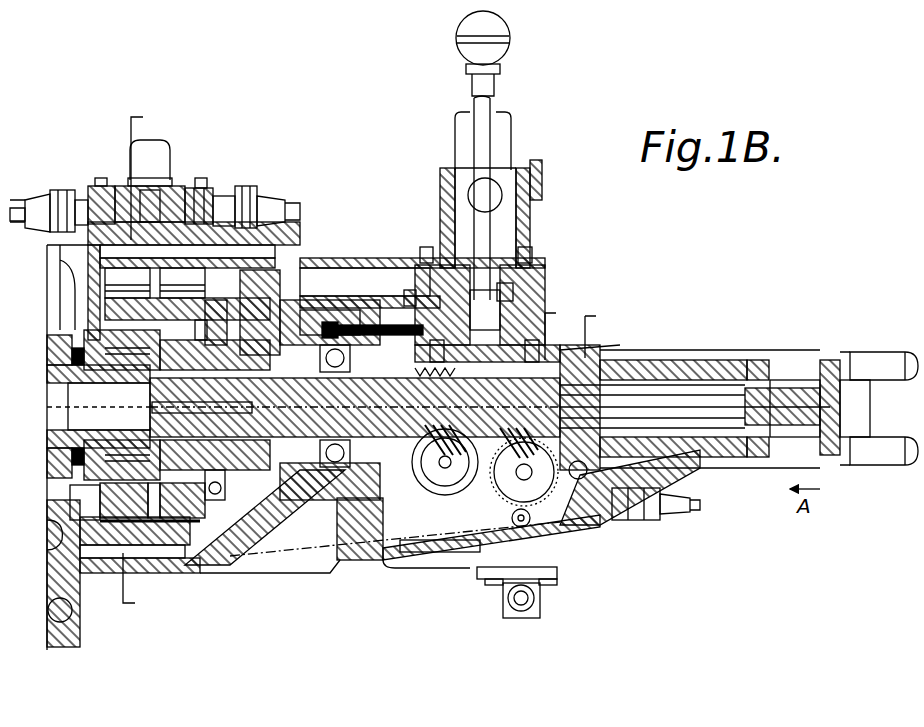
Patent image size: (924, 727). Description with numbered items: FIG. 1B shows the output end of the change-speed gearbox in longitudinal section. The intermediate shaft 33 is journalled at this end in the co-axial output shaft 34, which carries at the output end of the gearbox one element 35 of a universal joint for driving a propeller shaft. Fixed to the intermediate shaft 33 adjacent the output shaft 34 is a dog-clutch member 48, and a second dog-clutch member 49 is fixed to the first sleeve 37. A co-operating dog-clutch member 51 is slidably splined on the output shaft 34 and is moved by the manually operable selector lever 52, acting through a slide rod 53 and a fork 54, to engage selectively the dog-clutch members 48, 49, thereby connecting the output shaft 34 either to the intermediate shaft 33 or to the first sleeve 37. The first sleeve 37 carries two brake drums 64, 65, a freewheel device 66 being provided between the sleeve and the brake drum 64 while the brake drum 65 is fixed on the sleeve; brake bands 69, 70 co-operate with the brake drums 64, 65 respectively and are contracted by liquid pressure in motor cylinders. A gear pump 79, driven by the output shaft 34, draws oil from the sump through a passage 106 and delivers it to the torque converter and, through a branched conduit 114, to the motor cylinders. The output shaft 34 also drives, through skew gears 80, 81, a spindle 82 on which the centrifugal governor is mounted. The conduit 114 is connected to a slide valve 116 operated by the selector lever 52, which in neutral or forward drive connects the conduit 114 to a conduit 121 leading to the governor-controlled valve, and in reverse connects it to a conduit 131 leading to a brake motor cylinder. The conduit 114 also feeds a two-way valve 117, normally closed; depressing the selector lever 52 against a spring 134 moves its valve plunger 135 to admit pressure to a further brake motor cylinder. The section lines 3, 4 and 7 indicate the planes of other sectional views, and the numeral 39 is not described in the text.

The section line 7- 7 is at (194, 362).
The conduit 121 is at (118, 178).
The conduit 114 is at (157, 210).
The conduit 131 is at (218, 190).
The slide valve 116 is at (232, 236).
The slide rod 53 is at (358, 264).
The valve plunger 135 is at (410, 300).
The selector lever 52 is at (492, 102).
The spring 134 is at (523, 217).
The two-way valve 117 is at (510, 293).
The section line 3- 3 is at (534, 652).
The section line 4- 4 is at (596, 602).
The skew gear 80 is at (517, 341).
The output shaft 34 is at (590, 397).
The universal joint element 35 is at (873, 362).
The brake drum 64 is at (112, 299).
The brake drum 65 is at (178, 297).
The co-operating dog-clutch member 51 is at (208, 336).
The fork 54 is at (277, 304).
The freewheel device 66 is at (52, 356).
The intermediate shaft 33 is at (84, 398).
The first sleeve 37 is at (50, 437).
The seal 39 is at (47, 450).
The dog-clutch member 49 is at (180, 480).
The dog-clutch member 48 is at (210, 472).
The brake band 69 is at (113, 523).
The brake band 70 is at (173, 523).
The passage 106 is at (245, 523).
The gear pump 79 is at (327, 530).
The spindle 82 is at (520, 477).
The skew gear 81 is at (535, 503).